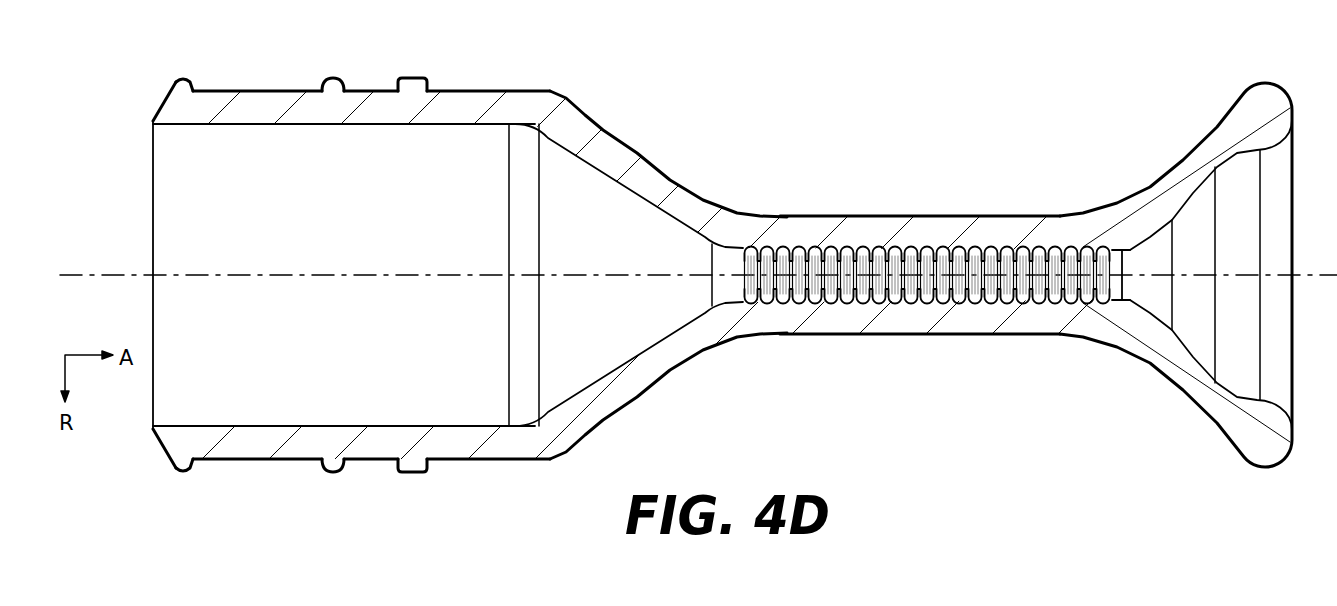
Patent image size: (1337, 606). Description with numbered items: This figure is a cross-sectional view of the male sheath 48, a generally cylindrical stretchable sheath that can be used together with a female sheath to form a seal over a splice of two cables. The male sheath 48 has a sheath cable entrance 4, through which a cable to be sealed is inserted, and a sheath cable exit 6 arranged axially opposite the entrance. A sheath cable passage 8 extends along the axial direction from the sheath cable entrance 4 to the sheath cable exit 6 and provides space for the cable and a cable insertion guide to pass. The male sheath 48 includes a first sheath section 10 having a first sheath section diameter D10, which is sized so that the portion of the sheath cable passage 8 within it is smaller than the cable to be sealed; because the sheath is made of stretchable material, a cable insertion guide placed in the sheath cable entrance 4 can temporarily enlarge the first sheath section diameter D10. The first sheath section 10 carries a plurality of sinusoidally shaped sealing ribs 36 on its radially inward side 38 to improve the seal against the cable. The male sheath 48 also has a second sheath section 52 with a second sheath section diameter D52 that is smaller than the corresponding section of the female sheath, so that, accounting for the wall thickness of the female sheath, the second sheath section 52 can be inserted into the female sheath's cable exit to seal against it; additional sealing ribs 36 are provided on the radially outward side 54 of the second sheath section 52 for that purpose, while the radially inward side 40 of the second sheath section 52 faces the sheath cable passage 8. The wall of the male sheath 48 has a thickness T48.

The sheath cable entrance 4 is at (1290, 99).
The sheath cable exit 6 is at (153, 427).
The sheath cable passage 8 is at (451, 226).
The first sheath section 10 is at (1027, 216).
The sealing ribs 36 is at (177, 78).
The radially inward side of first sheath section 38 is at (805, 294).
The radially inward side of second sheath section 40 is at (260, 125).
The male sheath 48 is at (985, 430).
The second sheath section of male sheath 52 is at (492, 90).
The radially outward side of second sheath section 54 is at (370, 461).
The second sheath section diameter D52 is at (225, 90).
The first sheath section diameter D10 is at (935, 177).
The thickness of male sheath T48 is at (257, 416).